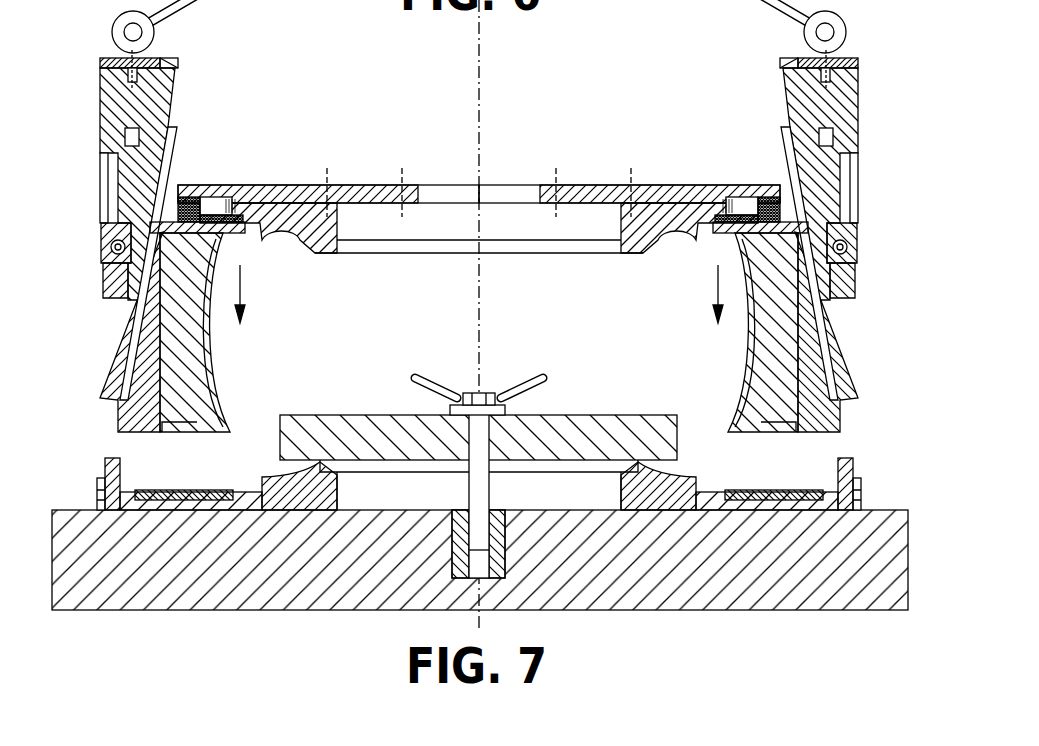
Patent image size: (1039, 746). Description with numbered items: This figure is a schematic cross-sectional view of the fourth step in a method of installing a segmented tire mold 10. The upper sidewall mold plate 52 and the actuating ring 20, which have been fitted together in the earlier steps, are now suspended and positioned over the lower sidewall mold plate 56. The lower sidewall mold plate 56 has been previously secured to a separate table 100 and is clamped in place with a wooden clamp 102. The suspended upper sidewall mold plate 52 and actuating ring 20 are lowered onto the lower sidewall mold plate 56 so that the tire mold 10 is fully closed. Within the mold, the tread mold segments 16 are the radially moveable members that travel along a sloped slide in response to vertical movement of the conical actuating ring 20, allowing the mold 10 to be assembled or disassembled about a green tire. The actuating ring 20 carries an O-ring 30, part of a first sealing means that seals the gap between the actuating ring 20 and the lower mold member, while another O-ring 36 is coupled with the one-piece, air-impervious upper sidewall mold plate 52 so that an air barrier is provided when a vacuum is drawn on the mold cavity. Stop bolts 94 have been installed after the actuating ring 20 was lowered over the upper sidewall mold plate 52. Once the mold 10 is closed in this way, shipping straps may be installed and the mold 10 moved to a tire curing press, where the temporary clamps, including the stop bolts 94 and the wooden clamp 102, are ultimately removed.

The segmented tire mold 10 is at (866, 90).
The tread mold segments 16 is at (197, 372).
The actuating ring 20 is at (173, 88).
The O-ring 30 is at (844, 298).
The O-ring 36 is at (182, 197).
The upper sidewall mold plate 52 is at (668, 235).
The lower sidewall mold plate 56 is at (328, 490).
The stop bolts 94 is at (847, 246).
The table 100 is at (883, 528).
The wooden clamp 102 is at (618, 417).